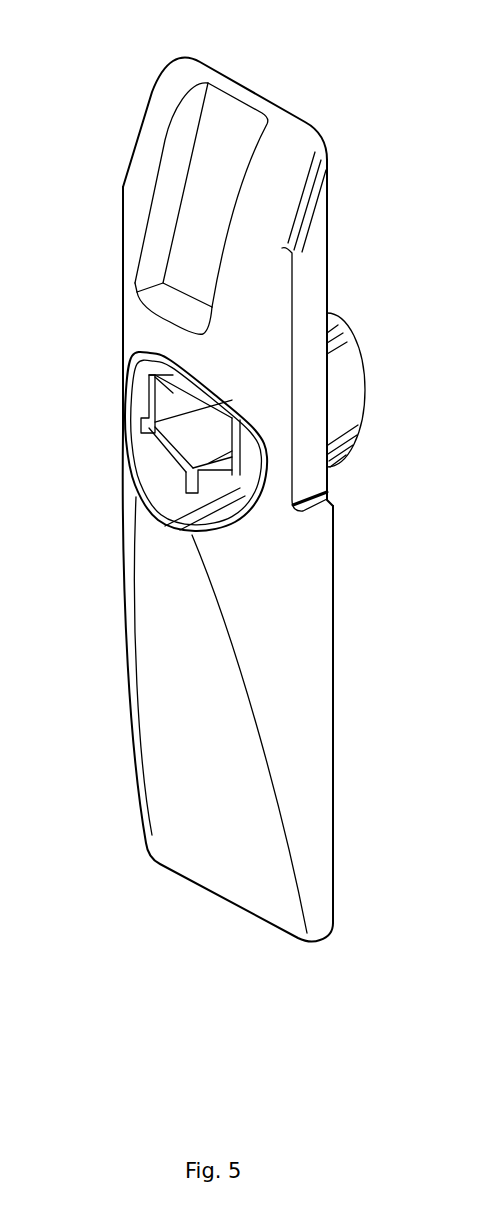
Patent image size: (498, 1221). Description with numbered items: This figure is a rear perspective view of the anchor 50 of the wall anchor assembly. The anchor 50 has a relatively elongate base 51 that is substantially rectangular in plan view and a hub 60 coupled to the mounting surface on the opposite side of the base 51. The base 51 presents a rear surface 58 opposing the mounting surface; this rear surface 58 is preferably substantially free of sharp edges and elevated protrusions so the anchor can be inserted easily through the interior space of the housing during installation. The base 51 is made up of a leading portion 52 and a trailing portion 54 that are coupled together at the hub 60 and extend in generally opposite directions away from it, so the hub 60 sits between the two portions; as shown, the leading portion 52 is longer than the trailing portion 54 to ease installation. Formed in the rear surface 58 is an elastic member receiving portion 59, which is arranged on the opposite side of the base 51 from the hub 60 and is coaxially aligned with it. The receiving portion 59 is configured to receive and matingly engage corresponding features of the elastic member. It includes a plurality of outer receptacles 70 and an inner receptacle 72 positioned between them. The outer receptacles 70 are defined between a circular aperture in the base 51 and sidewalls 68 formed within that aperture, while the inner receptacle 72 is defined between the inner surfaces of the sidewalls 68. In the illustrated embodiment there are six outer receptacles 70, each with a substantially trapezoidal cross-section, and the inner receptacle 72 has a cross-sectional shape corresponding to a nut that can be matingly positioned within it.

The anchor 50 is at (107, 288).
The base 51 is at (320, 860).
The leading portion 52 is at (157, 800).
The trailing portion 54 is at (291, 137).
The rear surface 58 is at (183, 715).
The elastic member receiving portion 59 is at (152, 542).
The hub 60 is at (353, 385).
The sidewalls 68 is at (145, 425).
The outer receptacles 70 is at (138, 403).
The inner receptacle 72 is at (173, 395).